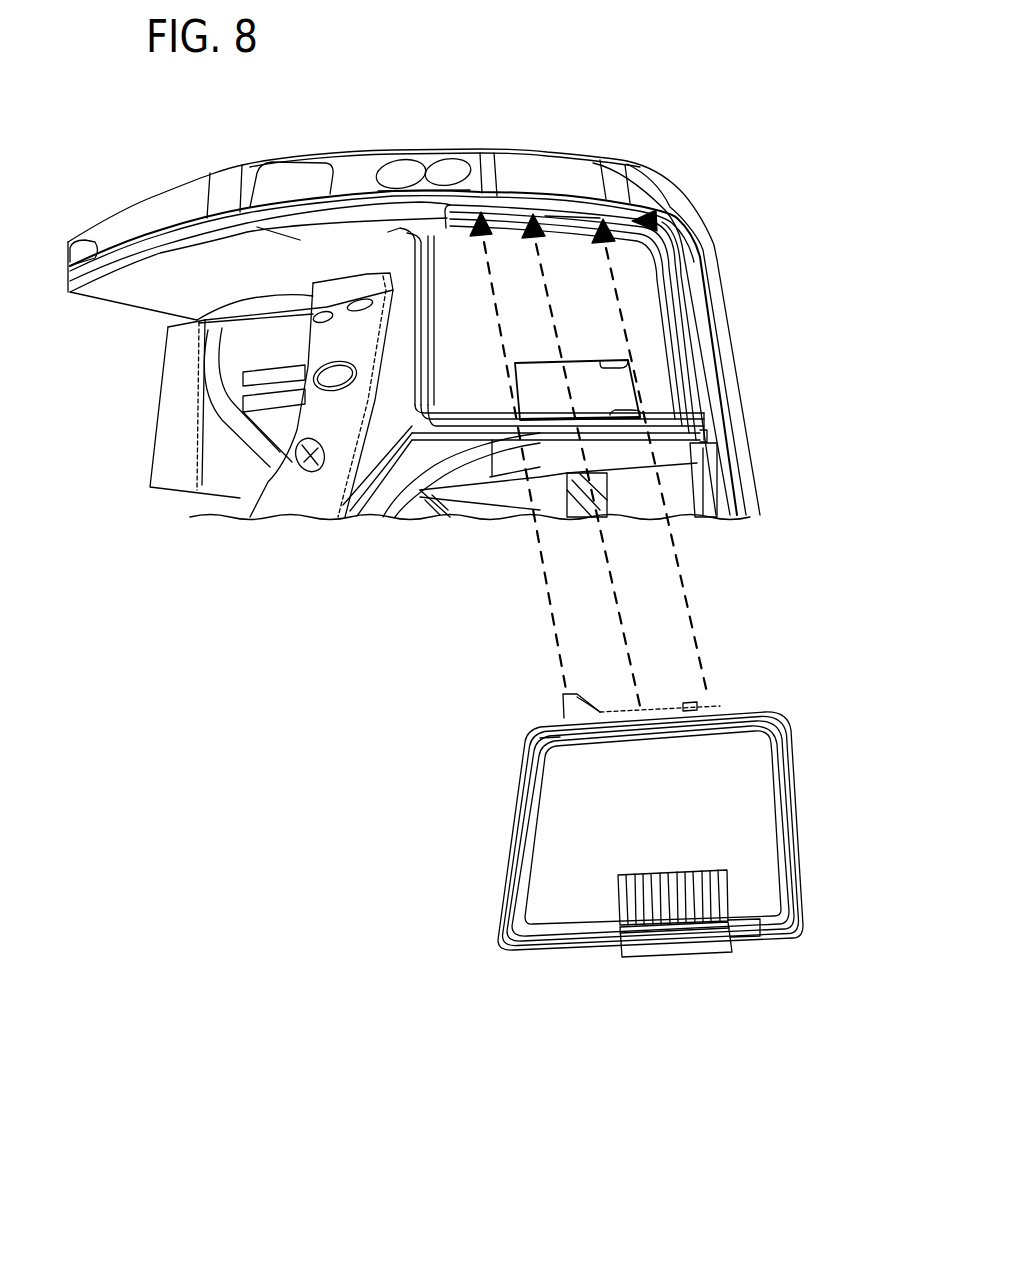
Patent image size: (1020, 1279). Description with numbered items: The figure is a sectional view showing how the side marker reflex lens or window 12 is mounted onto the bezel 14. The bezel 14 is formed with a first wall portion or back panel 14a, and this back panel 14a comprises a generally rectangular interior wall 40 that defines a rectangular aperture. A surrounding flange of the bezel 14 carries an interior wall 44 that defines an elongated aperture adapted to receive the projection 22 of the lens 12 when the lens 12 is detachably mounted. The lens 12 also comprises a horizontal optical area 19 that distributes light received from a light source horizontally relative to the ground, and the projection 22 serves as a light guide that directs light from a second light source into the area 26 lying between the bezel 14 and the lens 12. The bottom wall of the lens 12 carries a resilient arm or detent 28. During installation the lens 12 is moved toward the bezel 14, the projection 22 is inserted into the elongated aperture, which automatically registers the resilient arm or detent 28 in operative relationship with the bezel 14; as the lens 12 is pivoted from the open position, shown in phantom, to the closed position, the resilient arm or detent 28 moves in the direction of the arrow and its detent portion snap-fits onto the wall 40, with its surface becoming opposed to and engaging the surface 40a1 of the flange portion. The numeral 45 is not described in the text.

The bezel 14 is at (548, 167).
The first wall portion or back panel 14a is at (463, 333).
The interior wall 44 is at (556, 206).
The insertion direction arrows 45 is at (655, 222).
The interior wall 40 is at (630, 360).
The surface 40a1 is at (642, 420).
The projection 22 is at (565, 703).
The side marker reflex lens or window 12 is at (760, 797).
The horizontal optical area 19 is at (630, 910).
The area 26 is at (685, 955).
The resilient arm or detent 28 is at (728, 937).